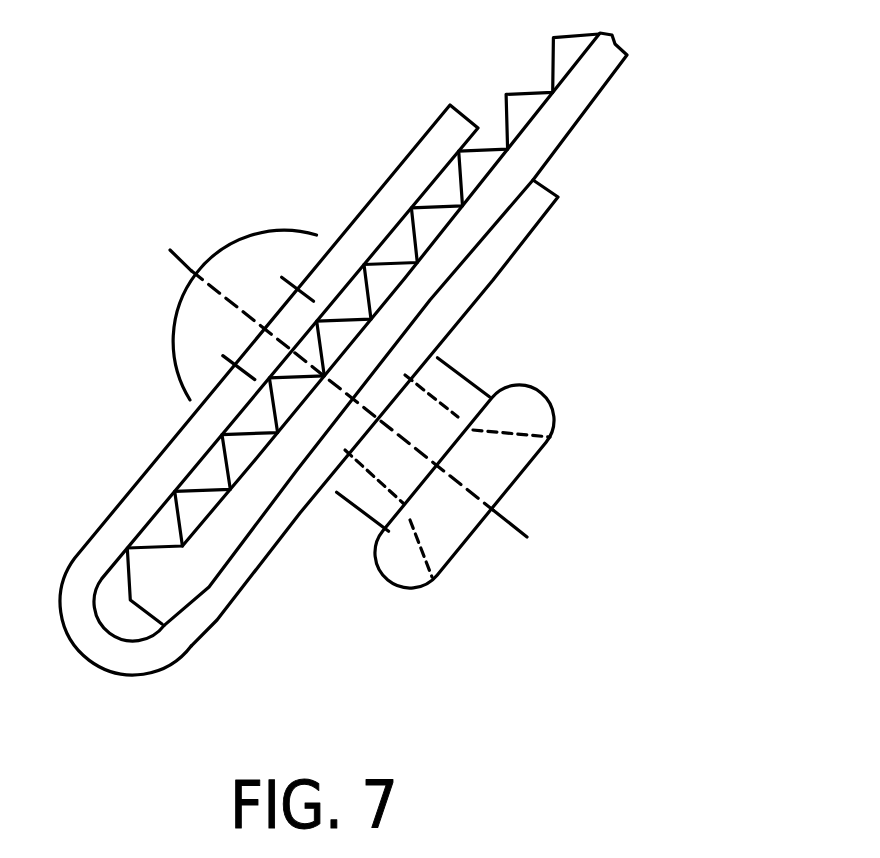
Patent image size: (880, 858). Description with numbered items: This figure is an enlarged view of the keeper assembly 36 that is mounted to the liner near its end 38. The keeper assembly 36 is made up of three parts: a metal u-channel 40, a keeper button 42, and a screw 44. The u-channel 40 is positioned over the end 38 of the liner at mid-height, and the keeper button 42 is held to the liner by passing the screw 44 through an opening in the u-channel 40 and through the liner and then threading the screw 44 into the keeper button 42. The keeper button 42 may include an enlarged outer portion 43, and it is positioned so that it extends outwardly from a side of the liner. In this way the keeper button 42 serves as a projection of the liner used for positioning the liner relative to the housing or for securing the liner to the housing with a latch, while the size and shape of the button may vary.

The keeper assembly 36 is at (428, 356).
The end 38 is at (550, 130).
The u-channel 40 is at (142, 471).
The keeper button 42 is at (505, 326).
The enlarged outer portion 43 is at (412, 588).
The screw 44 is at (273, 232).